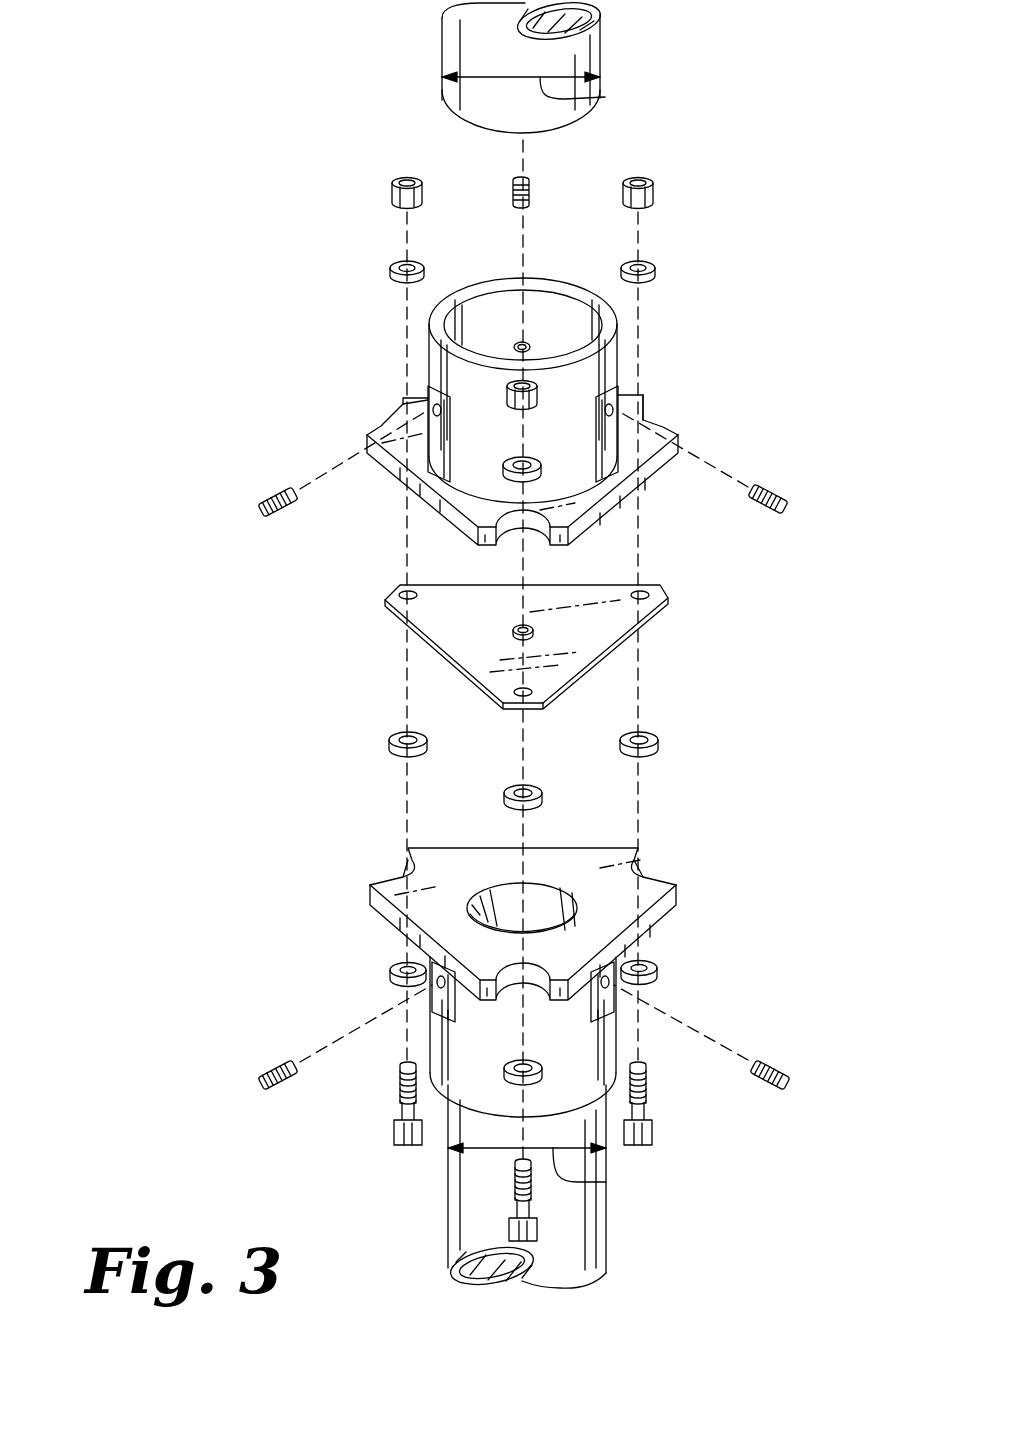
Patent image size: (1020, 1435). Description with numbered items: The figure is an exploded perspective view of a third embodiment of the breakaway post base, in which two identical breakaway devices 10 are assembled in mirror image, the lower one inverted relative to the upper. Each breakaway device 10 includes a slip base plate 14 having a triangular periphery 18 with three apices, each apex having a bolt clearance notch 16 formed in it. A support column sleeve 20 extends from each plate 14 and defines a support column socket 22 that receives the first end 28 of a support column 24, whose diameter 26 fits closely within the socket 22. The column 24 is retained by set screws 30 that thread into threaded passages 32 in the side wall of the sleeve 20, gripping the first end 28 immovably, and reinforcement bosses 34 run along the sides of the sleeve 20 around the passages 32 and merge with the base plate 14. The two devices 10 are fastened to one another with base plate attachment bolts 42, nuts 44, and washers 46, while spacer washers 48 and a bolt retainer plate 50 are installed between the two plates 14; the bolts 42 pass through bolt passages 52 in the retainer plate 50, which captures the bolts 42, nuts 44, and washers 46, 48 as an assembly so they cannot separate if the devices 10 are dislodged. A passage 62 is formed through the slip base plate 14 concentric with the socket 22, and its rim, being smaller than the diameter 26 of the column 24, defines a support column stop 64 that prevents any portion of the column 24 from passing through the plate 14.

The breakaway device 10 is at (165, 372).
The slip base plate 14 is at (640, 475).
The bolt clearance notch 16 is at (400, 420).
The triangular periphery 18 is at (395, 482).
The support column sleeve 20 is at (490, 282).
The support column socket 22 is at (558, 296).
The support column 24 is at (443, 45).
The diameter 26 is at (580, 100).
The first end 28 is at (478, 133).
The set screw 30 is at (532, 188).
The threaded passage 32 is at (518, 345).
The reinforcement boss 34 is at (420, 516).
The base plate attachment bolt 42 is at (394, 1132).
The nut 44 is at (390, 178).
The washer 46 is at (388, 270).
The spacer washer 48 is at (503, 793).
The bolt retainer plate 50 is at (490, 622).
The bolt passage 52 is at (392, 596).
The passage 62 is at (580, 885).
The support column stop 64 is at (548, 880).